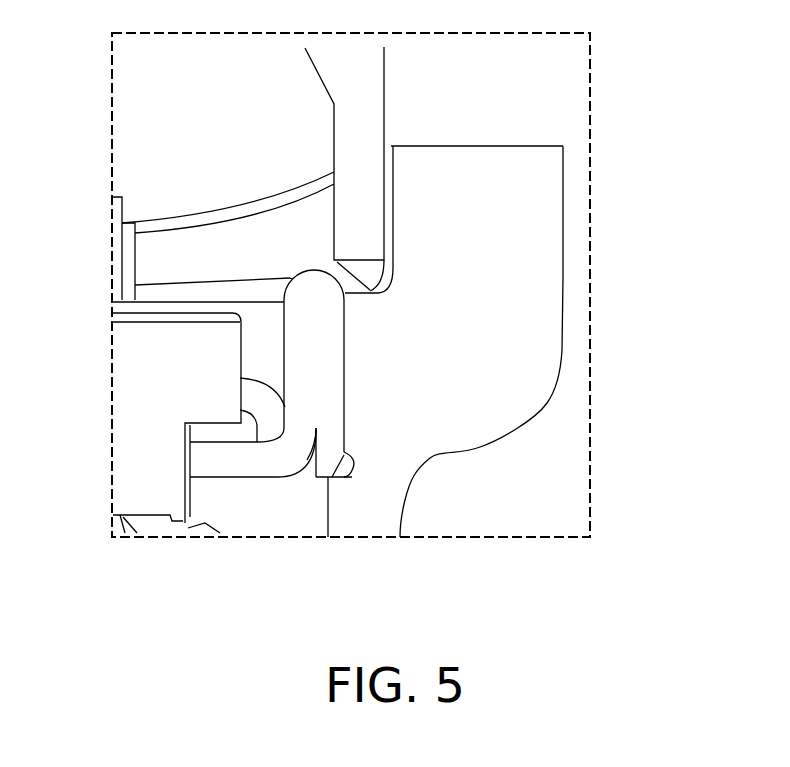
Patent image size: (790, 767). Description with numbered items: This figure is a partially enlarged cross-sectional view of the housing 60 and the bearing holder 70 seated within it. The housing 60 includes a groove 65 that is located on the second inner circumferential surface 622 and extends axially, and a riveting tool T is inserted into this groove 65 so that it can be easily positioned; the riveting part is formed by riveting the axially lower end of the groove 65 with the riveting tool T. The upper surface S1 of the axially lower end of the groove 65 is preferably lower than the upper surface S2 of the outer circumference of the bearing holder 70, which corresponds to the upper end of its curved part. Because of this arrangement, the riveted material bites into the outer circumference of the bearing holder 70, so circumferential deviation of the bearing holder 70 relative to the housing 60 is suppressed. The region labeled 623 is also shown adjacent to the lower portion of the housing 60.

The riveting tool T is at (353, 113).
The groove 65 is at (395, 218).
The upper surface of the axially lower end of the groove S1 is at (373, 295).
The upper surface of the outer circumference of the bearing holder S2 is at (302, 268).
The bearing holder 70 is at (305, 335).
The second inner circumferential surface 622 is at (347, 372).
The bottom portion 623 is at (331, 479).
The housing 60 is at (413, 432).